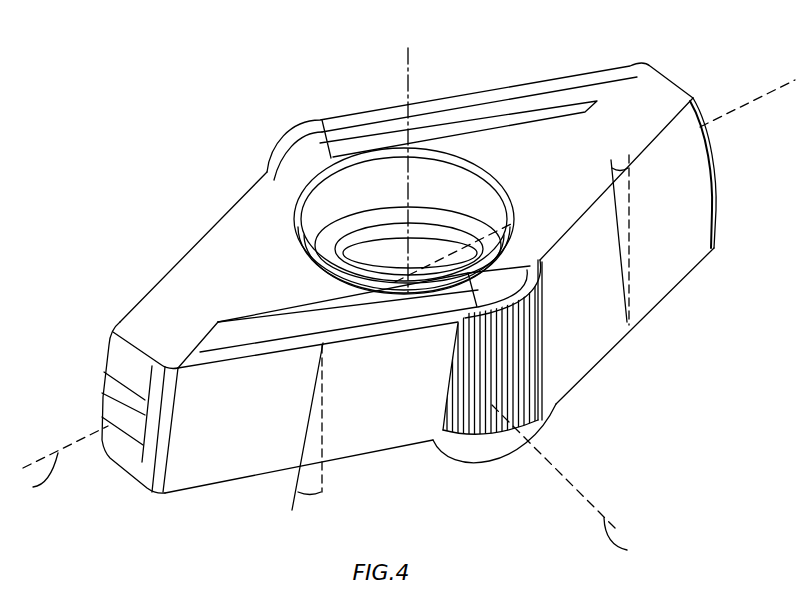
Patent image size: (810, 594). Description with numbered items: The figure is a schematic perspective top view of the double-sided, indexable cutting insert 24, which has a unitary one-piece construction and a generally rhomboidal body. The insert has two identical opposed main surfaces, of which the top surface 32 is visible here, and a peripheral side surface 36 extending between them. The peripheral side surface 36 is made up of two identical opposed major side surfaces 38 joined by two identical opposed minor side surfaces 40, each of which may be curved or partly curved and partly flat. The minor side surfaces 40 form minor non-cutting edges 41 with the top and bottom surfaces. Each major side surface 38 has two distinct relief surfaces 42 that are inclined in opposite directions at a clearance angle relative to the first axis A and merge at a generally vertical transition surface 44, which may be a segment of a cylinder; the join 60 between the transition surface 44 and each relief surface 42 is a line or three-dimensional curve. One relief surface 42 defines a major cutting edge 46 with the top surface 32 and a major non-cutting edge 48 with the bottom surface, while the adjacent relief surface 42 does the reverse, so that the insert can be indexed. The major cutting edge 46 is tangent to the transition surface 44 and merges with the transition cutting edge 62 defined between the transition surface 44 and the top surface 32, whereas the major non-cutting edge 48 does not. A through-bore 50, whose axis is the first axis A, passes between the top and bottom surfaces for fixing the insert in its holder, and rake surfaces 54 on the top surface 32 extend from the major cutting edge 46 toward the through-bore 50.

The cutting insert 24 is at (107, 143).
The top surface 32 is at (659, 84).
The peripheral side surface 36 is at (190, 475).
The major side surface 38 is at (247, 470).
The minor side surface 40 is at (96, 406).
The minor non-cutting edge 41 is at (650, 68).
The relief surface 42 is at (678, 250).
The transition surface 44 is at (469, 418).
The major cutting edge 46 is at (530, 83).
The major non-cutting edge 48 is at (655, 148).
The through-bore 50 is at (325, 212).
The rake surface 54 is at (460, 106).
The join 60 is at (537, 453).
The transition cutting edge 62 is at (540, 280).